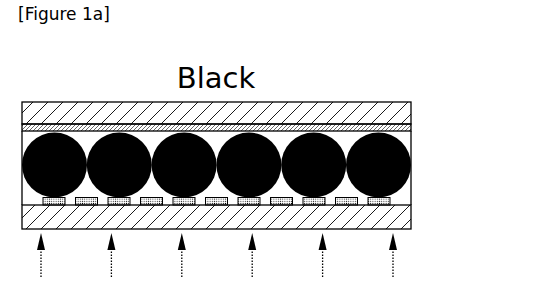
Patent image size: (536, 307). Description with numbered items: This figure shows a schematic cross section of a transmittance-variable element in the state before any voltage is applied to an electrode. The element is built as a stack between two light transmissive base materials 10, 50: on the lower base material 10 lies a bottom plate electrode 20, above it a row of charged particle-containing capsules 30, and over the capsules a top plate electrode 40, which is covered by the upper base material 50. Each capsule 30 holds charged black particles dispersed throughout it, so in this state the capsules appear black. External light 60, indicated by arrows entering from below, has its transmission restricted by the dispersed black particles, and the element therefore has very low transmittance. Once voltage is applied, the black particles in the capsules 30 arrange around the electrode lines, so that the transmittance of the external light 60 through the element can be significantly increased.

The light transmissive base material 10 is at (412, 214).
The bottom plate electrode 20 is at (412, 198).
The charged particle-containing capsules 30 is at (412, 160).
The top plate electrode 40 is at (412, 127).
The light transmissive base material 50 is at (412, 109).
The external light 60 is at (395, 263).